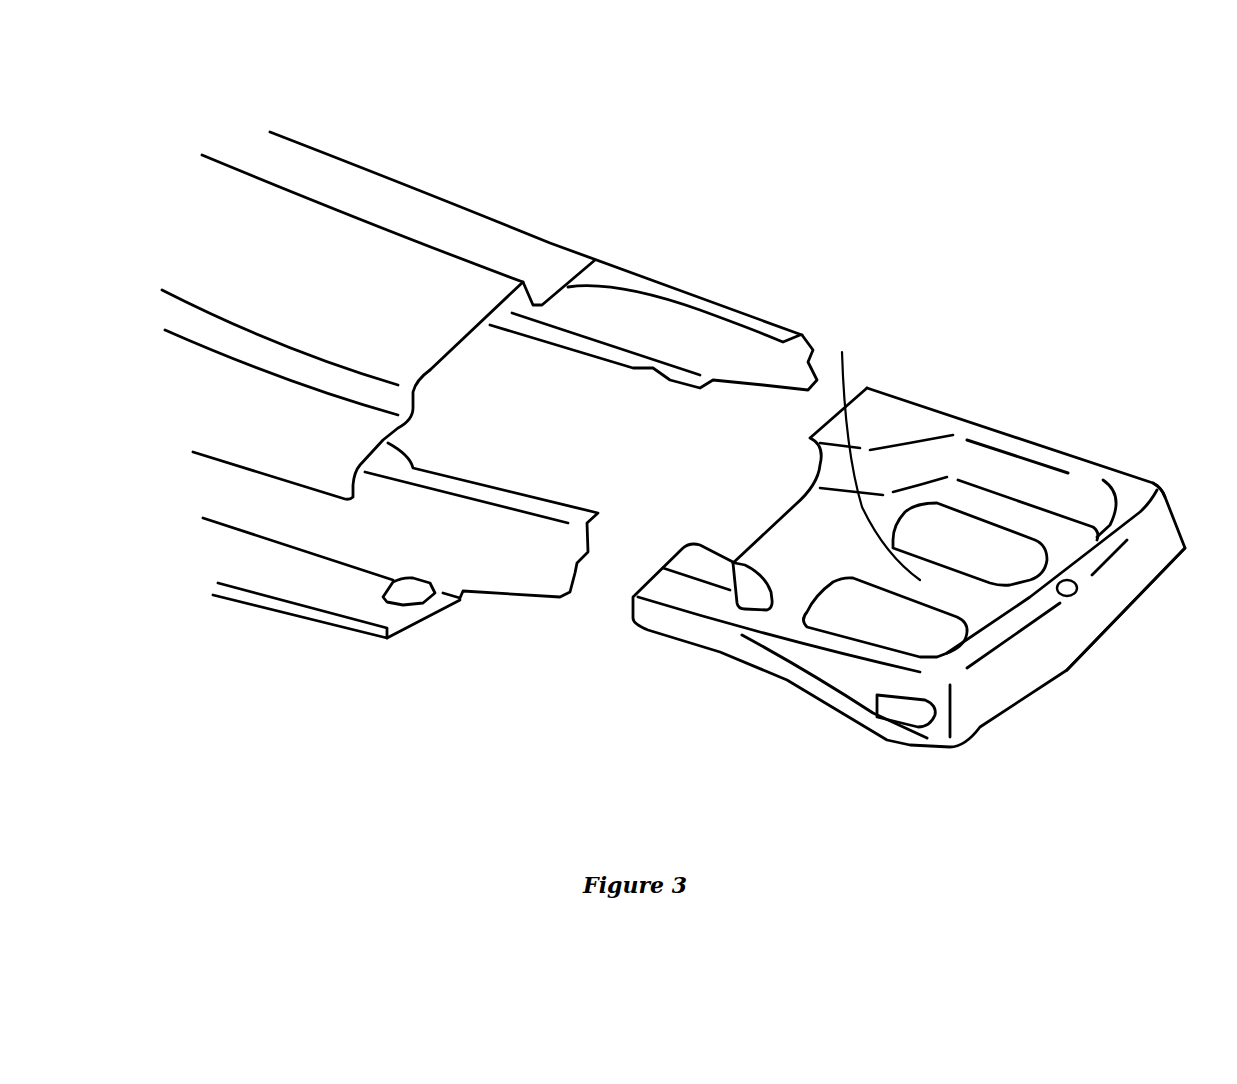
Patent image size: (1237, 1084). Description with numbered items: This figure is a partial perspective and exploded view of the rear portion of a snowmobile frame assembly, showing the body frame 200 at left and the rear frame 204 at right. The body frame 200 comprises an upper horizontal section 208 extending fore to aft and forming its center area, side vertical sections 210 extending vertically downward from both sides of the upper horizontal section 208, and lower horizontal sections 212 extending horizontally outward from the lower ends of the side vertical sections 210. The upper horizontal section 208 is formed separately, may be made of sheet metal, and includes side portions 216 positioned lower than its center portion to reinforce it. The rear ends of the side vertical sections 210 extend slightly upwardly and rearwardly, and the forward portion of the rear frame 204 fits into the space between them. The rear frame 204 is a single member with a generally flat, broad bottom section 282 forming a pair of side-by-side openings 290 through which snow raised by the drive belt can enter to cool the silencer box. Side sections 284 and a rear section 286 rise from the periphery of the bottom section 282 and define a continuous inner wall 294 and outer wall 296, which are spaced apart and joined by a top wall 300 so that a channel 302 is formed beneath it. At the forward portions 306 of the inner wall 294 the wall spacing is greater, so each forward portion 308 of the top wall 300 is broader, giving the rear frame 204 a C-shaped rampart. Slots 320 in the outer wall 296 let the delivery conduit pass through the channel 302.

The body frame 200 is at (489, 410).
The rear frame 204 is at (910, 563).
The upper horizontal section 208 is at (307, 243).
The side vertical sections 210 is at (682, 322).
The lower horizontal sections 212 is at (303, 587).
The side portions 216 is at (545, 260).
The bottom section 282 is at (869, 449).
The side sections 284 is at (1065, 460).
The rear section 286 is at (1078, 618).
The openings 290 is at (1010, 562).
The inner wall 294 is at (980, 463).
The outer wall 296 is at (857, 685).
The top wall 300 is at (1137, 500).
The channel 302 is at (990, 692).
The forward portions of the inner wall 306 is at (840, 462).
The forward portion of the top wall 308 is at (890, 410).
The slots 320 is at (908, 715).